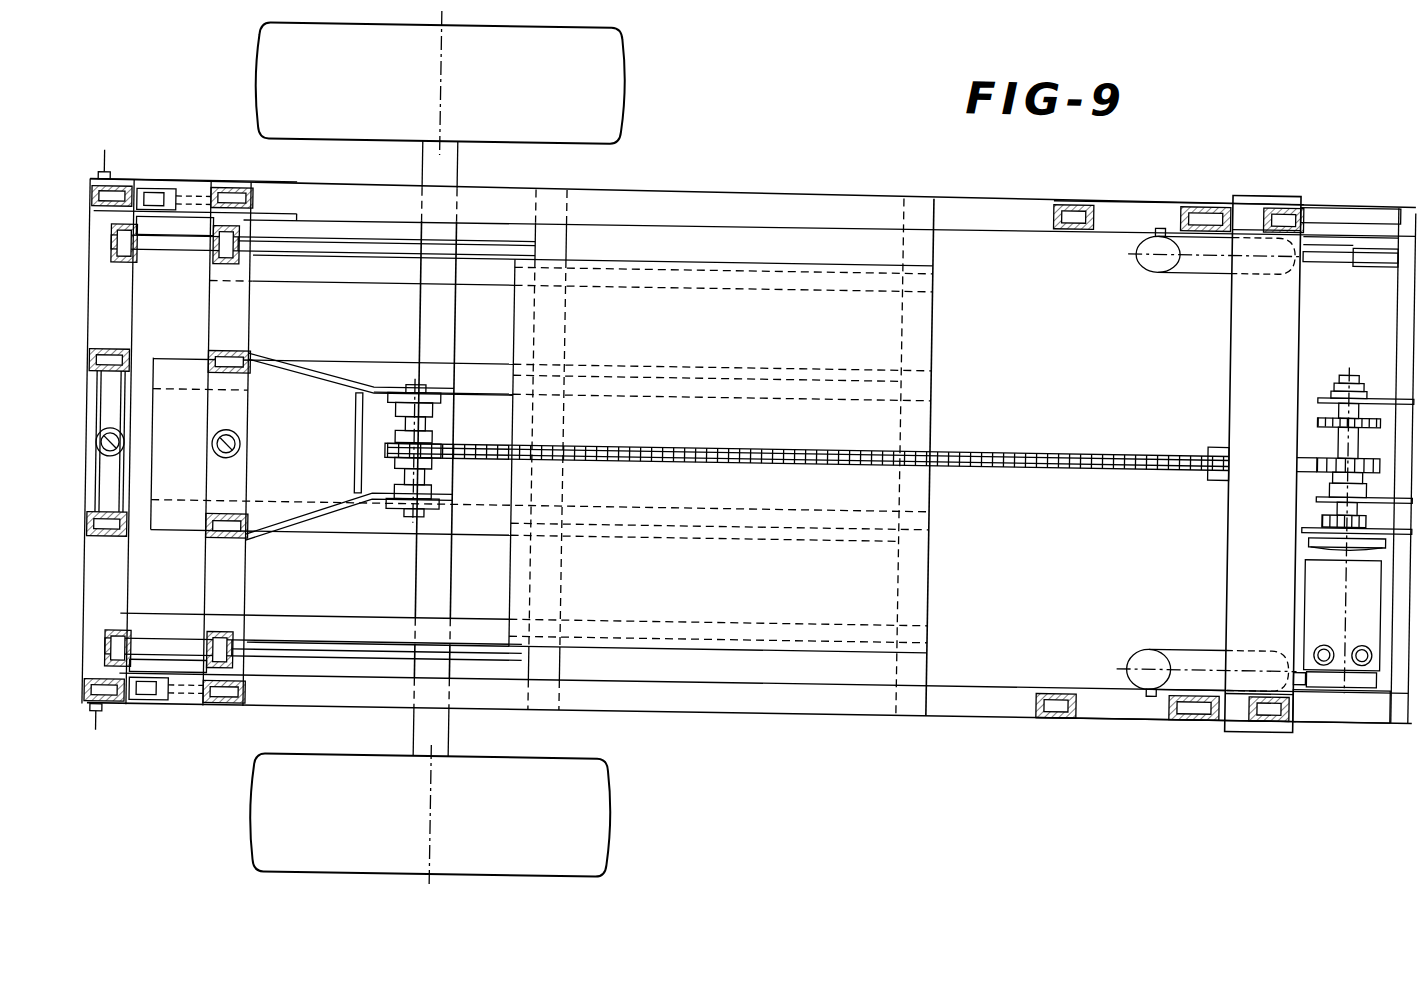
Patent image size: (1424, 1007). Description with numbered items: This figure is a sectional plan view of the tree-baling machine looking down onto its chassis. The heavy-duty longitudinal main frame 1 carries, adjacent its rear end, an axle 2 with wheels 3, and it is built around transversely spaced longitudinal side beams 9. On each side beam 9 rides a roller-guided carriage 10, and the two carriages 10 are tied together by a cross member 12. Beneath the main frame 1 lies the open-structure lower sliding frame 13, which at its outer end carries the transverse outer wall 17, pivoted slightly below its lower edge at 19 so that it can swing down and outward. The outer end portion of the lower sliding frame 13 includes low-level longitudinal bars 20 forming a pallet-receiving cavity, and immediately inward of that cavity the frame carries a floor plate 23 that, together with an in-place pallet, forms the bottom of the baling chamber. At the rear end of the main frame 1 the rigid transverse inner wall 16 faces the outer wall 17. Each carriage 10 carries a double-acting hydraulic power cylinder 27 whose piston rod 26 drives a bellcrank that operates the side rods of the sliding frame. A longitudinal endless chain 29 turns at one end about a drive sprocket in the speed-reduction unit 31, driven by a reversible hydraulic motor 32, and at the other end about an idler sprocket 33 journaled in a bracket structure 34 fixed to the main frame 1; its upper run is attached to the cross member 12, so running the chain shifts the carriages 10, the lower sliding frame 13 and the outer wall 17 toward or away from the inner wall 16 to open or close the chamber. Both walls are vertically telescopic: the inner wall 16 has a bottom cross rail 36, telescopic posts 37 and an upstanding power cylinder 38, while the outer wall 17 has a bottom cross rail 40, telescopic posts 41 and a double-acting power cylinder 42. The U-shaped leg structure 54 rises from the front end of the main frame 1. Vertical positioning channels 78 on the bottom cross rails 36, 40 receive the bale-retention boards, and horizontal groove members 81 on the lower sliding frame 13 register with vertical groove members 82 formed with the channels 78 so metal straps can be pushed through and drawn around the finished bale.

The main frame 1 is at (1008, 716).
The axle 2 is at (446, 177).
The wheels 3 is at (612, 82).
The side beams 9 is at (811, 200).
The carriage 10 is at (1128, 198).
The cross member 12 is at (1232, 540).
The lower sliding frame 13 is at (191, 714).
The inner wall 16 is at (212, 415).
The outer wall 17 is at (130, 490).
The pivot 19 is at (106, 437).
The longitudinal bars 20 is at (400, 268).
The floor plate 23 is at (918, 326).
The piston rod 26 is at (1306, 254).
The double-acting hydraulic power cylinder 27 is at (1200, 264).
The endless chain 29 is at (1076, 450).
The speed-reduction unit 31 is at (1335, 378).
The reversible hydraulic motor 32 is at (1312, 604).
The idler sprocket 33 is at (386, 452).
The bracket structure 34 is at (292, 374).
The bottom cross rail 36 is at (240, 332).
The telescopic posts 37 is at (224, 196).
The power cylinder 38 is at (234, 464).
The bottom cross rail 40 is at (118, 327).
The telescopic posts 41 is at (110, 196).
The double-acting power cylinder 42 is at (124, 450).
The U-shaped leg structure 54 is at (1348, 200).
The vertical positioning channels 78 is at (220, 272).
The horizontal groove members 81 is at (372, 262).
The vertical groove members 82 is at (114, 272).